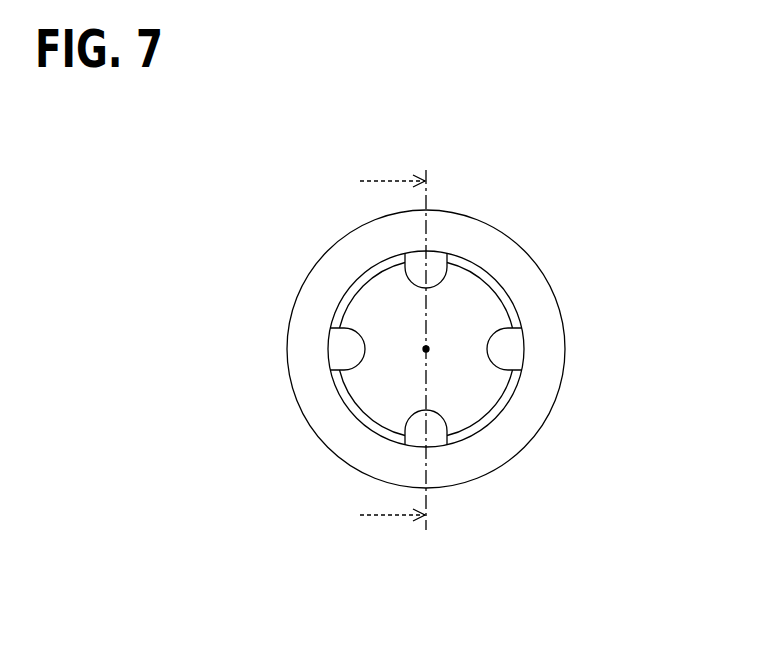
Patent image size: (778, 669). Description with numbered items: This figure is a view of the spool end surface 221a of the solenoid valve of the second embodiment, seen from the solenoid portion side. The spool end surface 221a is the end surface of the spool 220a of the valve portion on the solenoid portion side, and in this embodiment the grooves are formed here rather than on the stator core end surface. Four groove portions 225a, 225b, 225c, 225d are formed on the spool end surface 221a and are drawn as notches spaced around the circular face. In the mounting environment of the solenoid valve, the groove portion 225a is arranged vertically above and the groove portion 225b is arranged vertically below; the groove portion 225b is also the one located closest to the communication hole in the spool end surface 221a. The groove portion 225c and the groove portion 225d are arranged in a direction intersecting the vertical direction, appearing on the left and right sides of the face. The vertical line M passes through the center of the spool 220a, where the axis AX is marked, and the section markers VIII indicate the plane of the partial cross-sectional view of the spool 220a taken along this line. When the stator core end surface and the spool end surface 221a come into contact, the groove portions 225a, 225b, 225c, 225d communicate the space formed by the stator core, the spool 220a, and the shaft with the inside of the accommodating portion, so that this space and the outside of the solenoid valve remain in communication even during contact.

The spool 220a is at (547, 240).
The spool end surface 221a is at (385, 373).
The groove portion 225a is at (432, 262).
The groove portion 225b is at (437, 435).
The groove portion 225c is at (508, 357).
The groove portion 225d is at (342, 352).
The central axis AX is at (432, 353).
The center line M is at (430, 332).
The section line VIII- VIII is at (376, 350).